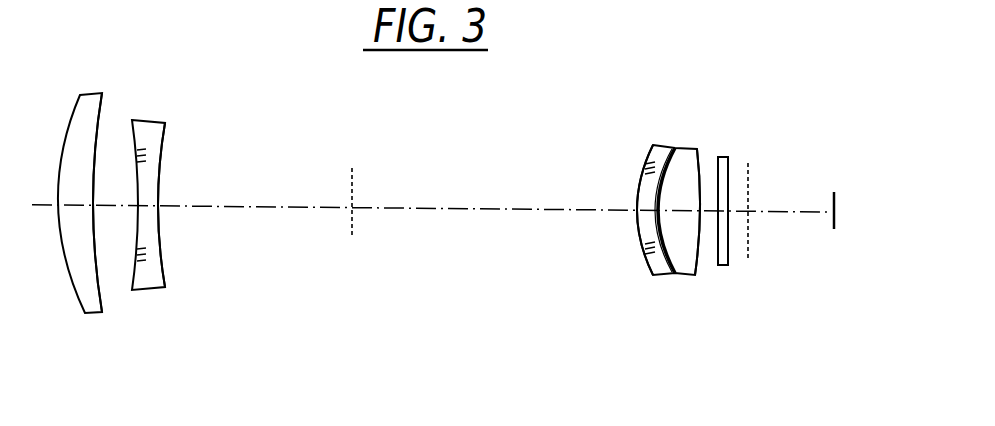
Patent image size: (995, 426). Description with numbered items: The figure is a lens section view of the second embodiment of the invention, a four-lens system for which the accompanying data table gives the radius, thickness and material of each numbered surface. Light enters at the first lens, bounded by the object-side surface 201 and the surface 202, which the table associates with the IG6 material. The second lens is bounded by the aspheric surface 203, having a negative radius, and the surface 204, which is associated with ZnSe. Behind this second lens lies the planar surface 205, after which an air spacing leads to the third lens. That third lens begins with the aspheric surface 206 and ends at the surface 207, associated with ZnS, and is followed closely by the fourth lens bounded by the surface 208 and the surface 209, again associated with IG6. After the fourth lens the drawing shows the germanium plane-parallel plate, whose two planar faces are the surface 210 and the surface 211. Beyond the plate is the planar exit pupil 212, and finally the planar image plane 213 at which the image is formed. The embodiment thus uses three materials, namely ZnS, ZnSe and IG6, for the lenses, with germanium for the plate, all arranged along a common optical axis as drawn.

The first lens surface 201 is at (80, 99).
The second lens surface 202 is at (102, 307).
The third lens surface 203 is at (132, 125).
The fourth lens surface 204 is at (166, 278).
The planar surface 205 is at (352, 238).
The fifth lens surface 206 is at (648, 162).
The sixth lens surface 207 is at (663, 268).
The seventh lens surface 208 is at (689, 147).
The eighth lens surface 209 is at (697, 265).
The plane-parallel plate first surface 210 is at (713, 161).
The plane-parallel plate second surface 211 is at (730, 258).
The exit pupil 212 is at (749, 176).
The image plane 213 is at (833, 229).